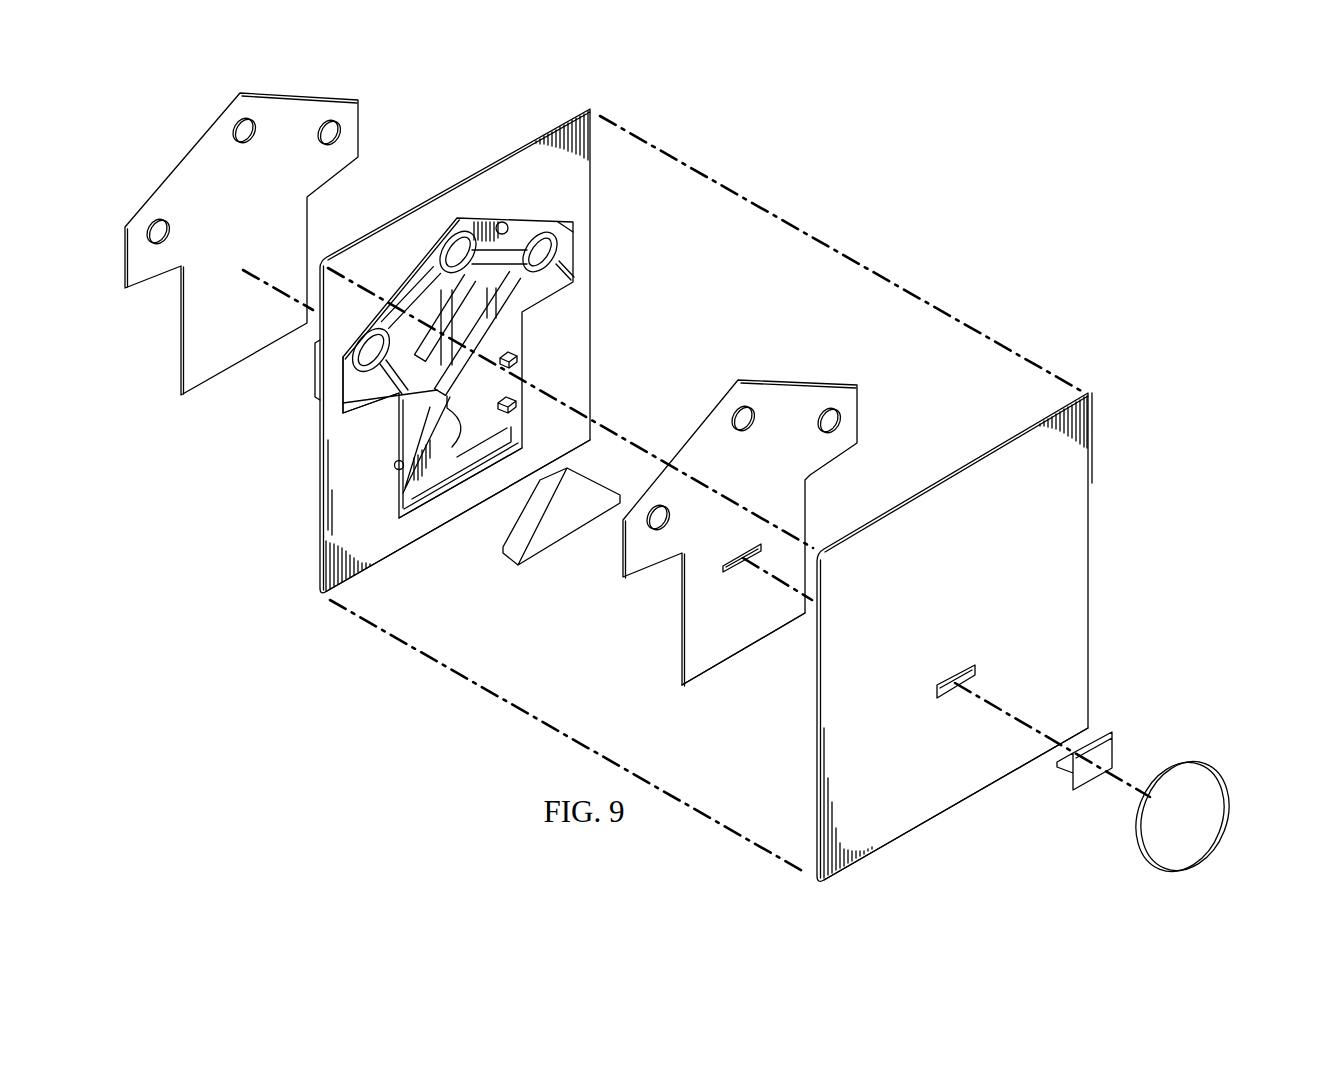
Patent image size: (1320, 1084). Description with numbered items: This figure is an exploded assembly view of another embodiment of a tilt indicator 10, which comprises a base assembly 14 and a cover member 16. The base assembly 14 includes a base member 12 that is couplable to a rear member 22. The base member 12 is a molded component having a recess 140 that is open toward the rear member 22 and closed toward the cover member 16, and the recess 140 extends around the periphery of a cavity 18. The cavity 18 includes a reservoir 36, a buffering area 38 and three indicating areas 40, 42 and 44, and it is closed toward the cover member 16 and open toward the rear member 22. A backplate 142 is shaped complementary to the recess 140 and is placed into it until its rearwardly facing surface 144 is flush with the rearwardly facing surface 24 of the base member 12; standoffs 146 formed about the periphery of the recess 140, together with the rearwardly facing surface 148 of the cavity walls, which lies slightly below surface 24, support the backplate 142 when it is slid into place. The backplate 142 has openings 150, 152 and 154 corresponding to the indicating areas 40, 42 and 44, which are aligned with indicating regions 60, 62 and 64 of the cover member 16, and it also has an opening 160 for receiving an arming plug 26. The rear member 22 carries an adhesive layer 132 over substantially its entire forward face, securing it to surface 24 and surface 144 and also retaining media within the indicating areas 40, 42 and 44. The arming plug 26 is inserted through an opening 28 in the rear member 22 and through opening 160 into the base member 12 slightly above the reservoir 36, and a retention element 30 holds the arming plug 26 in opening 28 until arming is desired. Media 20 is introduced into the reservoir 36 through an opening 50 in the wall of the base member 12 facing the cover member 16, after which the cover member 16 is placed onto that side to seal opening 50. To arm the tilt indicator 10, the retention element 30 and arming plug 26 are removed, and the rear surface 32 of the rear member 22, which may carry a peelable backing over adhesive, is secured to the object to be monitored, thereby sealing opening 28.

The tilt indicator 10 is at (1011, 248).
The base member 12 is at (596, 211).
The base assembly 14 is at (405, 690).
The cover member 16 is at (360, 122).
The cavity 18 is at (428, 490).
The media 20 is at (556, 548).
The rear member 22 is at (1093, 499).
The rearwardly facing surface 24 is at (592, 394).
The arming plug 26 is at (1113, 745).
The opening 28 is at (976, 670).
The retention element 30 is at (1216, 836).
The rear surface 32 is at (1093, 676).
The reservoir 36 is at (453, 455).
The buffering area 38 is at (512, 331).
The indicating area 40 is at (352, 372).
The indicating area 42 is at (580, 266).
The indicating area 44 is at (472, 218).
The opening 50 is at (433, 440).
The indicating region 60 is at (168, 236).
The indicating region 62 is at (335, 143).
The indicating region 64 is at (252, 141).
The adhesive layer 132 is at (813, 762).
The recess 140 is at (395, 420).
The backplate 142 is at (859, 426).
The rearwardly facing surface 144 is at (709, 663).
The standoffs 146 is at (504, 221).
The rearwardly facing surface 148 is at (418, 492).
The opening 150 is at (672, 517).
The opening 152 is at (842, 414).
The opening 154 is at (754, 414).
The opening 160 is at (744, 560).